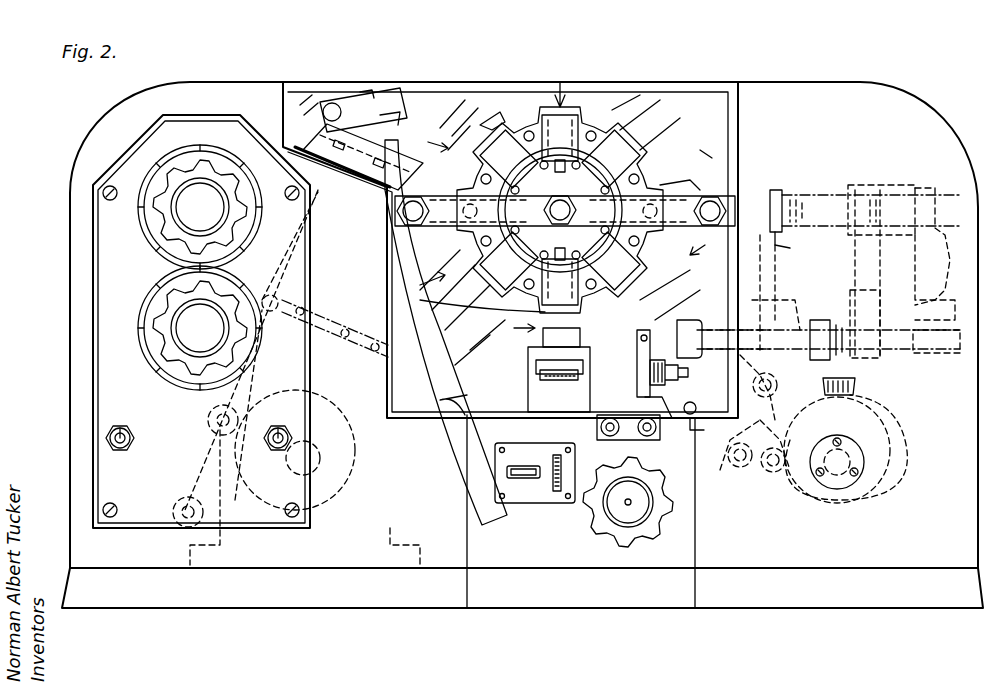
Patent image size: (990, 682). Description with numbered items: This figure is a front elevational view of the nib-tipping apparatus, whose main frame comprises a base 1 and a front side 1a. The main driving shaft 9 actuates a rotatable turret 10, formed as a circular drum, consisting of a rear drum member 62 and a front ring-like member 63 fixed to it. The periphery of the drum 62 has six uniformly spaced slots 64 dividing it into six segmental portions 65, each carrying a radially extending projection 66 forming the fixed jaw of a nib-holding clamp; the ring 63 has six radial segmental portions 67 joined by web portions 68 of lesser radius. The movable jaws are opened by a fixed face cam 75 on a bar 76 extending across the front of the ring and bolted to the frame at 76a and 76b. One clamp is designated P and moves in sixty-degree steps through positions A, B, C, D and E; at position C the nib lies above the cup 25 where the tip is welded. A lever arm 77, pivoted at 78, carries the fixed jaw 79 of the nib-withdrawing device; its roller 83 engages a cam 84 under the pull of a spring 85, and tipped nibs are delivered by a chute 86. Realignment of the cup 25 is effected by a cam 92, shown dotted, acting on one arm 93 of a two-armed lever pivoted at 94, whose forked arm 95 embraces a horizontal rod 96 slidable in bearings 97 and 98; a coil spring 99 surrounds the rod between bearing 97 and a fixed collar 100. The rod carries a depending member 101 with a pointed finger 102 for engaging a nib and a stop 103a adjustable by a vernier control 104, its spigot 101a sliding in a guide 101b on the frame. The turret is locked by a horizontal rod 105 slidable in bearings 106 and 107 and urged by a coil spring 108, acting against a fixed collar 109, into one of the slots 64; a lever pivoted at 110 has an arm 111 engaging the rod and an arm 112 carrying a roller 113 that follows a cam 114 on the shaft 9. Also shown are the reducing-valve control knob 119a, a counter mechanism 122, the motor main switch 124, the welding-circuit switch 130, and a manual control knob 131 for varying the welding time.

The base 1 is at (925, 592).
The front side 1a is at (898, 105).
The main driving shaft 9 is at (825, 490).
The rotatable turret 10 is at (610, 125).
The cup 25 is at (540, 340).
The rear circular drum member 62 is at (470, 308).
The front ring-like member 63 is at (655, 120).
The slots 64 is at (528, 120).
The segmental portions 65 is at (600, 130).
The integral projection 66 is at (482, 135).
The radial segmental portions 67 is at (490, 120).
The web portions 68 is at (548, 112).
The fixed face cam 75 is at (578, 212).
The bar 76 is at (681, 178).
The bolted end of bar 76a is at (418, 198).
The bolted end of bar 76b is at (716, 200).
The lever arm 77 is at (285, 300).
The pivot 78 is at (176, 504).
The fixed jaw 79 is at (365, 98).
The roller 83 is at (208, 418).
The cam 84 is at (322, 512).
The spring 85 is at (372, 352).
The chute 86 is at (488, 528).
The cam 92 is at (905, 493).
The arm 93 is at (735, 458).
The pivot 94 is at (705, 422).
The forked arm 95 is at (775, 387).
The horizontal rod 96 is at (955, 353).
The bearing 97 is at (935, 277).
The bearing 98 is at (690, 318).
The coil spring 99 is at (865, 319).
The fixed collar 100 is at (835, 325).
The depending member 101 is at (650, 340).
The spigot 101a is at (600, 427).
The guide 101b is at (653, 430).
The pointed finger 102 is at (590, 347).
The terminal 103a is at (650, 375).
The vernier control 104 is at (674, 402).
The horizontal rod 105 is at (935, 215).
The bearing 106 is at (903, 185).
The bearing 107 is at (772, 190).
The coil spring 108 is at (800, 196).
The fixed collar 109 is at (801, 242).
The pivot 110 is at (777, 300).
The arm 111 is at (777, 282).
The arm 112 is at (740, 355).
The roller 113 is at (776, 480).
The cam 114 is at (898, 410).
The control knob 119a is at (612, 535).
The counter mechanism 122 is at (530, 490).
The main switch 124 is at (108, 438).
The switch 130 is at (285, 435).
The manual control knob 131 is at (160, 317).
The position A is at (707, 162).
The position B is at (701, 244).
The position C is at (517, 327).
The position D is at (423, 284).
The position E is at (429, 141).
The clamp P is at (565, 75).